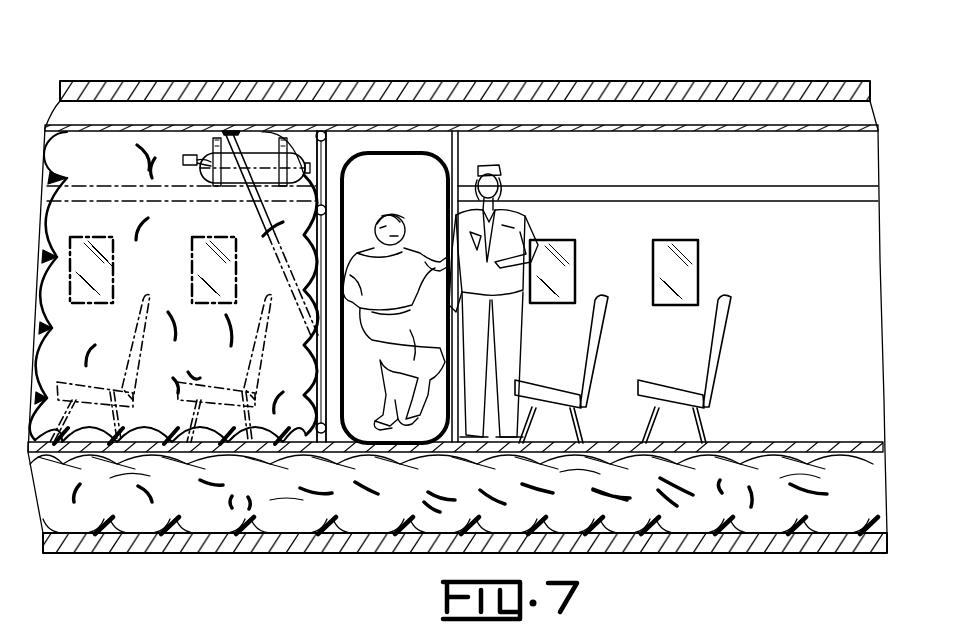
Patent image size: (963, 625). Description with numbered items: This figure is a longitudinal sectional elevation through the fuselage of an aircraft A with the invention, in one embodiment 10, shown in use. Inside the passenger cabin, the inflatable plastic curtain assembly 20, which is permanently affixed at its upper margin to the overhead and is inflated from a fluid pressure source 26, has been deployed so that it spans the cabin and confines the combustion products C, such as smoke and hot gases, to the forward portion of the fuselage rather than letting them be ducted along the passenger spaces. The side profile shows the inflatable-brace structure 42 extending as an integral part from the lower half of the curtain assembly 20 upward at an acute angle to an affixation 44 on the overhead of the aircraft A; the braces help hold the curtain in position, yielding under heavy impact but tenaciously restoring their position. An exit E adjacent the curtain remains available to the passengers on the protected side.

The embodiment of the invention 10 is at (394, 74).
The inflatable plastic curtain assembly 20 is at (333, 370).
The fluid pressure source 26 is at (314, 130).
The inflatable-brace structure 42 is at (242, 145).
The affixation 44 is at (223, 133).
The aircraft A is at (407, 80).
The combustion products C is at (107, 167).
The exit E is at (410, 180).